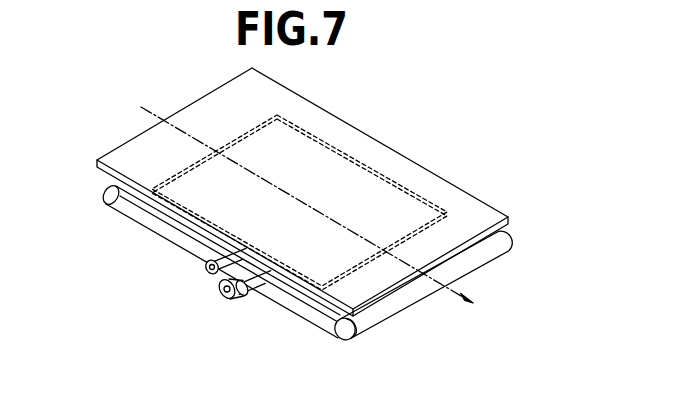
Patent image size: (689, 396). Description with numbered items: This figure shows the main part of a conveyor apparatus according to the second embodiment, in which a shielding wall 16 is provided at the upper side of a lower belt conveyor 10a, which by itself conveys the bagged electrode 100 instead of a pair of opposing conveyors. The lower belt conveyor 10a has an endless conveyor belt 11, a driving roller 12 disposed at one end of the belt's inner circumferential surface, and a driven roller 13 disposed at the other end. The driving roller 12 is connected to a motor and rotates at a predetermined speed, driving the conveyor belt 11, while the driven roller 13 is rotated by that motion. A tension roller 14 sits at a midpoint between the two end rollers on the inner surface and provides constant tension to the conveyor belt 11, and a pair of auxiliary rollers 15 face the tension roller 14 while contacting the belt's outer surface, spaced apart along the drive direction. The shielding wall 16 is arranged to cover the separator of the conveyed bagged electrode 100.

The lower belt conveyor 10a is at (160, 329).
The conveyor belt 11 is at (175, 226).
The driving roller 12 is at (335, 338).
The driven roller 13 is at (109, 203).
The tension roller 14 is at (220, 290).
The pair of auxiliary rollers 15 is at (224, 297).
The shielding wall 16 is at (355, 140).
The bagged electrode 100 is at (413, 190).